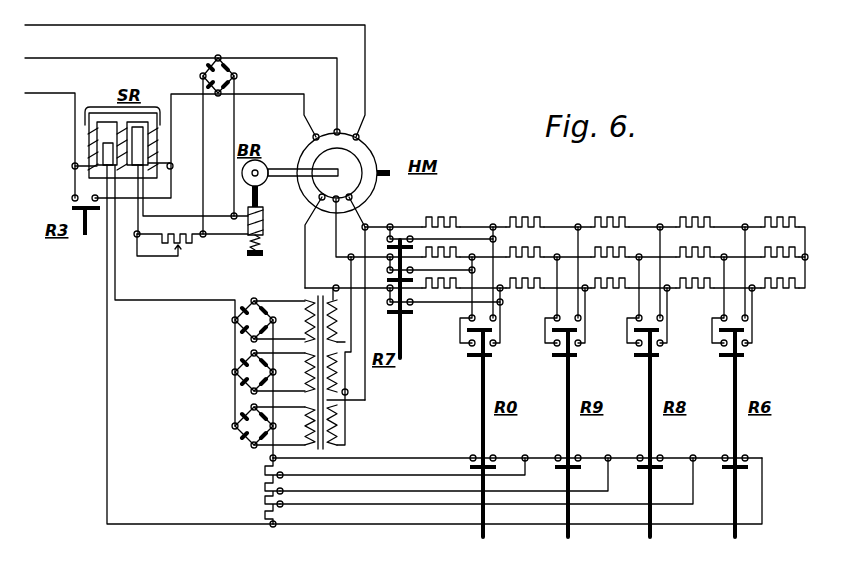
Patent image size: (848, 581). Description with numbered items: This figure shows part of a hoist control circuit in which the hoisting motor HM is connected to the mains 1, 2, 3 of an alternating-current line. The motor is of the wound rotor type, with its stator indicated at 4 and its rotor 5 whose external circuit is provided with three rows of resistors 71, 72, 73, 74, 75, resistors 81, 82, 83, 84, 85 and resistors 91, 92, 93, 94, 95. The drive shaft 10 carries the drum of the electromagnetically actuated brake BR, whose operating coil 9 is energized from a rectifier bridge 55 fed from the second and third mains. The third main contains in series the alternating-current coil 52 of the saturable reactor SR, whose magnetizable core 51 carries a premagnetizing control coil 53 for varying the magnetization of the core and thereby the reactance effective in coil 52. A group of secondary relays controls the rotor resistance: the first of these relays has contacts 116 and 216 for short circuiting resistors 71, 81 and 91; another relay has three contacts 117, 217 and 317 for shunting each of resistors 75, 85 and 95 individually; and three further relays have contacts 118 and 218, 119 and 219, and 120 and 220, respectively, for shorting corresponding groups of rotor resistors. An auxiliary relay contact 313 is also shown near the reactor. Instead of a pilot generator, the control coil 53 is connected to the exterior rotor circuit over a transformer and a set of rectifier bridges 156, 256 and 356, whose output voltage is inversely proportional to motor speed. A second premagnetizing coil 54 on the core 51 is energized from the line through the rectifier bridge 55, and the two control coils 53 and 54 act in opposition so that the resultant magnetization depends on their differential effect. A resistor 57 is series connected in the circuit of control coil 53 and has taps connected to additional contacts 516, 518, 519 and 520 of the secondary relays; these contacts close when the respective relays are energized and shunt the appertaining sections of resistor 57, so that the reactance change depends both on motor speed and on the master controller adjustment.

The main 1 is at (106, 23).
The main 2 is at (106, 56).
The main 3 is at (70, 90).
The motor stator 4 is at (362, 146).
The rotor 5 is at (366, 163).
The operating coil 9 is at (264, 216).
The drive shaft 10 is at (283, 168).
The magnetizable core 51 is at (140, 158).
The alternating-current coil 52 is at (158, 147).
The premagnetizing control coil 53 is at (112, 124).
The second premagnetizing coil 54 is at (381, 407).
The rectifier bridge 55 is at (236, 78).
The resistor 57 is at (265, 482).
The resistor 71 is at (787, 224).
The resistor 72 is at (702, 224).
The resistor 73 is at (617, 224).
The resistor 74 is at (532, 224).
The resistor 75 is at (448, 224).
The resistor 81 is at (768, 256).
The resistor 82 is at (705, 254).
The resistor 83 is at (620, 254).
The resistor 84 is at (535, 254).
The resistor 85 is at (450, 254).
The resistor 91 is at (794, 300).
The resistor 92 is at (707, 300).
The resistor 93 is at (622, 300).
The resistor 94 is at (537, 300).
The resistor 95 is at (458, 300).
The contact 116 is at (716, 339).
The contact 117 is at (406, 237).
The contact 118 is at (631, 339).
The contact 119 is at (550, 339).
The contact 120 is at (458, 338).
The rectifier bridge 156 is at (231, 322).
The contact 216 is at (724, 360).
The contact 217 is at (390, 292).
The contact 218 is at (641, 360).
The contact 219 is at (557, 360).
The contact 220 is at (472, 360).
The rectifier bridge 256 is at (231, 374).
The relay R3 contact 313 is at (70, 208).
The contact 317 is at (406, 306).
The rectifier bridge 356 is at (231, 430).
The contact 516 is at (750, 456).
The contact 518 is at (661, 455).
The contact 519 is at (576, 455).
The contact 520 is at (478, 452).